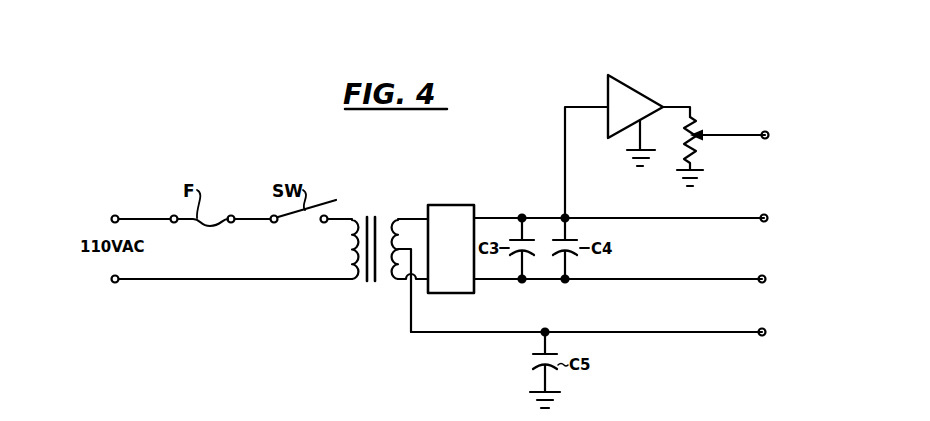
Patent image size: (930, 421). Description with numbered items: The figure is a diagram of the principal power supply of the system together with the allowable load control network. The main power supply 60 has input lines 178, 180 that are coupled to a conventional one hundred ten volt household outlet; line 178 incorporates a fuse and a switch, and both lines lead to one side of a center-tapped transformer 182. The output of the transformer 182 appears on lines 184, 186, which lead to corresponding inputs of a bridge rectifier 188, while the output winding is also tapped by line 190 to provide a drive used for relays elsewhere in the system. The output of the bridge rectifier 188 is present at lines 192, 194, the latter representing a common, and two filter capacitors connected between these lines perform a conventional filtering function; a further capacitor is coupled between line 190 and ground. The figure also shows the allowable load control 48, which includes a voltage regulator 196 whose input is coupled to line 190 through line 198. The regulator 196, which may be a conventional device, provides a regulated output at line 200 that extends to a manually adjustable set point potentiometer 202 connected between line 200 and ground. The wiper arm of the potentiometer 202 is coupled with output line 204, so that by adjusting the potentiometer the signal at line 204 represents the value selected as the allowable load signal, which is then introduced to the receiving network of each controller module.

The allowable load control 48 is at (758, 48).
The main power supply 60 is at (366, 366).
The input line 178 is at (148, 219).
The input line 180 is at (272, 280).
The center-tapped transformer 182 is at (372, 205).
The output line of transformer 184 is at (413, 217).
The output line of transformer 186 is at (401, 280).
The bridge rectifier 188 is at (470, 205).
The tap line 190 is at (484, 334).
The output line of bridge rectifier 192 is at (653, 217).
The common line 194 is at (648, 278).
The voltage regulator 196 is at (631, 86).
The input line of voltage regulator 198 is at (576, 107).
The regulated output line 200 is at (686, 108).
The set point potentiometer 202 is at (718, 154).
The output line 204 is at (728, 135).